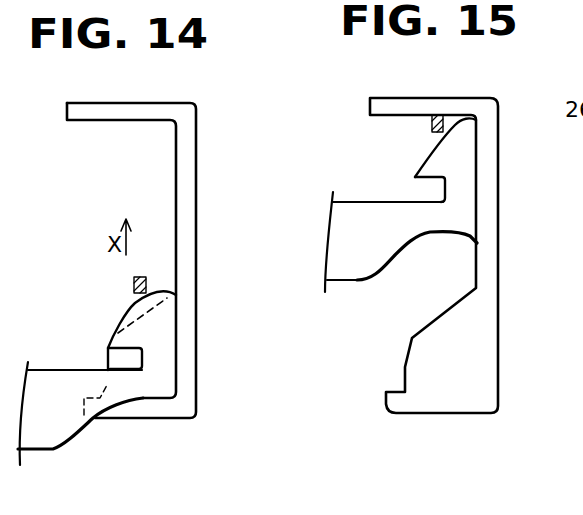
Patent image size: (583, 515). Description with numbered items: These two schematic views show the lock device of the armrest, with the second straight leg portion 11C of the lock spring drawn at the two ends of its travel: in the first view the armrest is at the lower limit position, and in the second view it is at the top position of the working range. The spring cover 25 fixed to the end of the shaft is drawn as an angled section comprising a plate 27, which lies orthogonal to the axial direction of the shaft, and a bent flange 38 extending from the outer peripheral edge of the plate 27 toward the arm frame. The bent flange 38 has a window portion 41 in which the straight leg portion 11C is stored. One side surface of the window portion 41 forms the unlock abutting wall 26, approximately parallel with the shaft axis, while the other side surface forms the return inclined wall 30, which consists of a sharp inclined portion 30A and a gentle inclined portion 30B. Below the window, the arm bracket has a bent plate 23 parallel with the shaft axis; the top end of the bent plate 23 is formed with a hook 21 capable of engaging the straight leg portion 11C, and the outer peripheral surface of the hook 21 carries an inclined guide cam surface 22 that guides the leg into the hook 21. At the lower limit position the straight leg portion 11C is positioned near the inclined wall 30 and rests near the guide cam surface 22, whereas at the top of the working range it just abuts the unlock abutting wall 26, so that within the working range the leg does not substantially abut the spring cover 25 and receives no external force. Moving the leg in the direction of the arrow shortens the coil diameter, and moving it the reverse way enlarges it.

In FIG. 14, the spring cover 25 is at (200, 132).
In FIG. 15, the spring cover 25 is at (498, 308).
In FIG. 14, the unlock abutting wall 26 is at (97, 121).
In FIG. 15, the unlock abutting wall 26 is at (395, 116).
In FIG. 14, the plate 27 is at (189, 166).
In FIG. 15, the plate 27 is at (492, 160).
In FIG. 14, the window portion 41 is at (153, 206).
In FIG. 14, the second straight leg portion 11C is at (133, 280).
In FIG. 15, the second straight leg portion 11C is at (437, 115).
In FIG. 14, the inclined guide cam surface 22 is at (130, 313).
In FIG. 15, the inclined guide cam surface 22 is at (428, 148).
In FIG. 14, the return inclined wall 30 is at (107, 362).
In FIG. 15, the return inclined wall 30 is at (408, 343).
In FIG. 14, the sharp inclined portion 30A is at (145, 313).
In FIG. 15, the sharp inclined portion 30A is at (440, 315).
In FIG. 14, the gentle inclined portion 30B is at (110, 387).
In FIG. 15, the gentle inclined portion 30B is at (398, 365).
In FIG. 14, the hook 21 is at (130, 365).
In FIG. 15, the hook 21 is at (433, 192).
In FIG. 14, the bent plate 23 is at (60, 413).
In FIG. 15, the bent plate 23 is at (345, 235).
In FIG. 15, the bent flange 38 is at (447, 415).